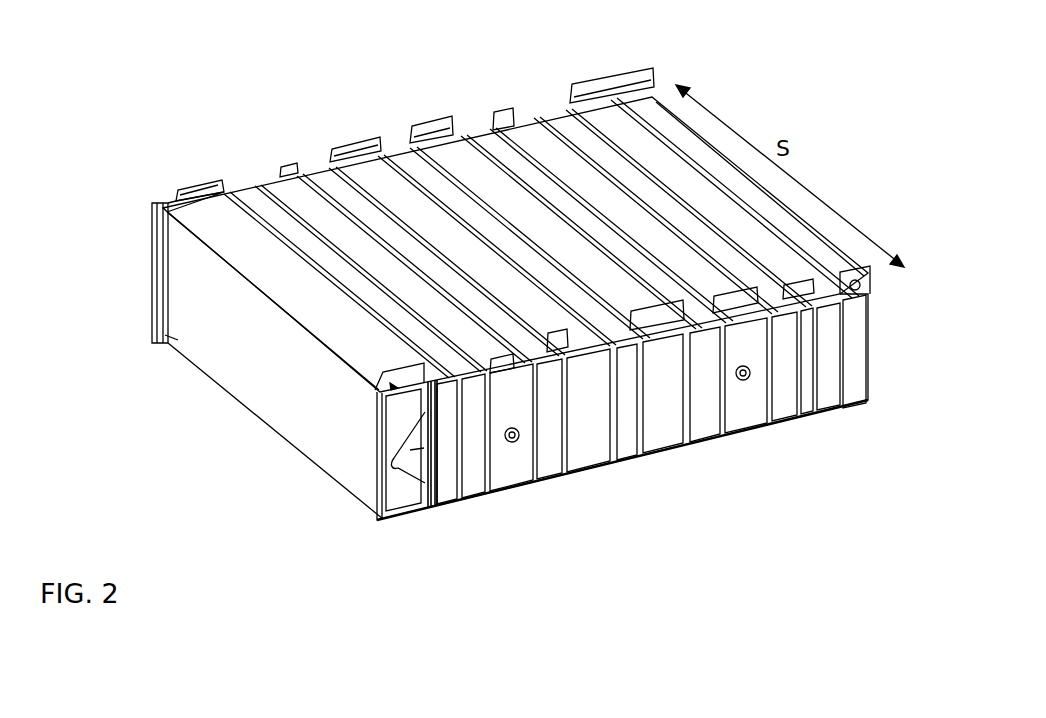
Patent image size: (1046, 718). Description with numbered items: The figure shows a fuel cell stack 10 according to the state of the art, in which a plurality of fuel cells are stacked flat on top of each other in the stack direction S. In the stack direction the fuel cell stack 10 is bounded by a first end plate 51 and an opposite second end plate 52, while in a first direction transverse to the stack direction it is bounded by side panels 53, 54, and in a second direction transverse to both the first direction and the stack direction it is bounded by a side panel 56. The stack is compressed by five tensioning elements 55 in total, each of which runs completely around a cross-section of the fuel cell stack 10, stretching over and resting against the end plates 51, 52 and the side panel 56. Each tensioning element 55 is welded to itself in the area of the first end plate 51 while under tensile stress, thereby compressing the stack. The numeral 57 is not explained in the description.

The fuel cell stack 10 is at (110, 153).
The first end plate 51 is at (680, 434).
The second end plate 52 is at (167, 200).
The side panel 53 is at (297, 418).
The side panel 54 is at (862, 358).
The tensioning element 55 is at (250, 200).
The side panel 56 is at (388, 192).
The front corner plate 57 is at (400, 437).